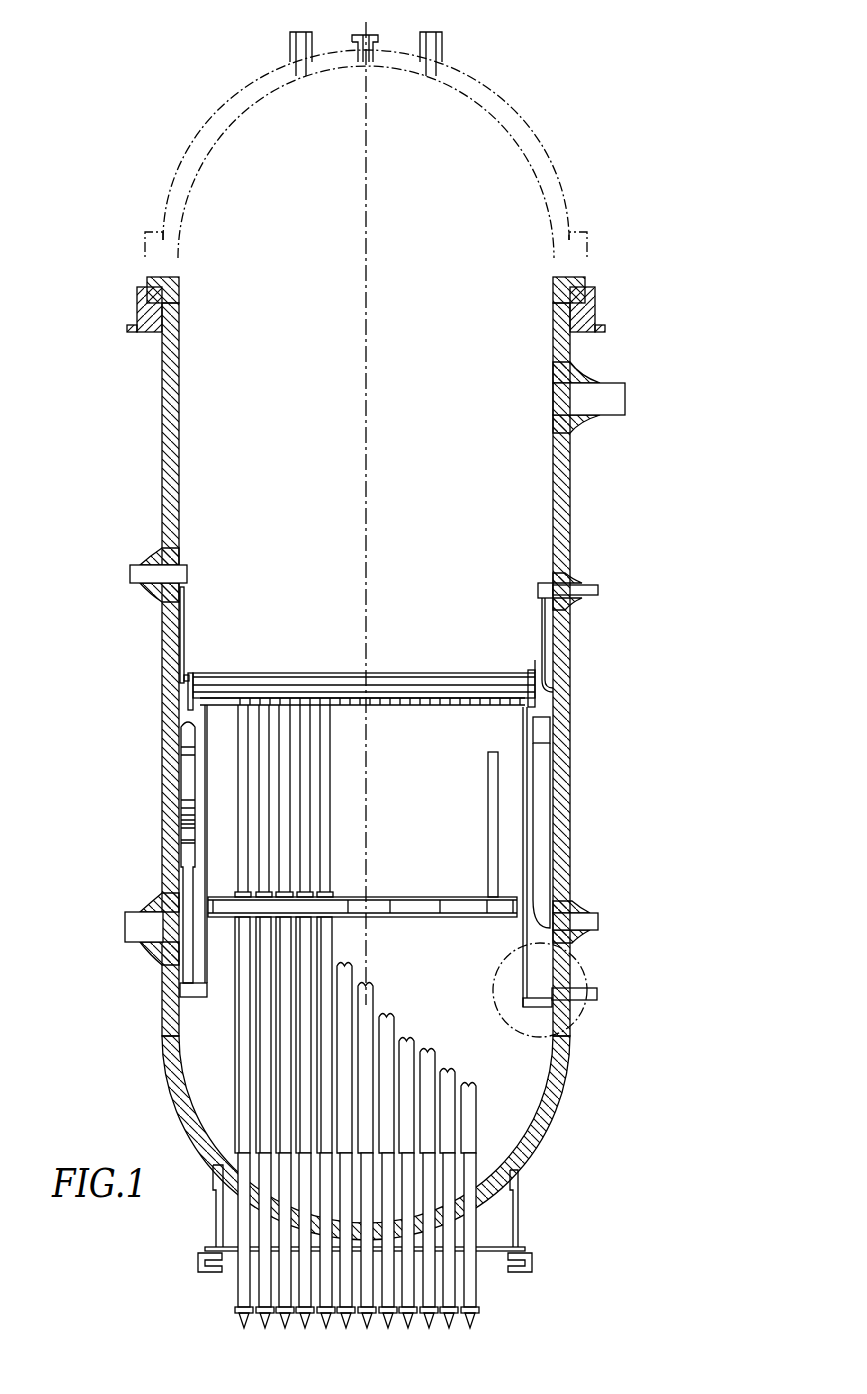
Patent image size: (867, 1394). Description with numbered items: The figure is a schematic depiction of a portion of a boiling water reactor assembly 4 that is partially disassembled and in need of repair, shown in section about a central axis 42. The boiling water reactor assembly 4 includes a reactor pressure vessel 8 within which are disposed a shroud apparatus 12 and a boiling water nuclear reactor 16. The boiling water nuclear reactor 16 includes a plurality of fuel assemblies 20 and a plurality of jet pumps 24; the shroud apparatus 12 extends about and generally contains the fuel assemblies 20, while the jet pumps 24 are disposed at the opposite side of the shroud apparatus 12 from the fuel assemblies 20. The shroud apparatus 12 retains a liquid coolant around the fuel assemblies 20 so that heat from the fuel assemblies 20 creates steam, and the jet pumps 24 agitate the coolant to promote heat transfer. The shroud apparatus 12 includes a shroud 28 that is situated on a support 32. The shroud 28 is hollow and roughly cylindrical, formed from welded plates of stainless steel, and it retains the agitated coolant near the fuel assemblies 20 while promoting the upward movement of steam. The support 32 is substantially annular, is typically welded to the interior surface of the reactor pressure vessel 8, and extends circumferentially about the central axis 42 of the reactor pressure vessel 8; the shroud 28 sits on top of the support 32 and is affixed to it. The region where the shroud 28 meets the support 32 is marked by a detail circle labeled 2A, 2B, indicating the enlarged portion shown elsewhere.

The boiling water reactor assembly 4 is at (612, 515).
The reactor pressure vessel 8 is at (570, 666).
The shroud apparatus 12 is at (537, 788).
The boiling water nuclear reactor 16 is at (296, 1122).
The fuel assemblies 20 is at (237, 1047).
The jet pumps 24 is at (192, 970).
The shroud 28 is at (521, 827).
The support 32 is at (538, 1010).
The central axis 42 is at (366, 408).
The detail region of FIG. 2A is at (604, 974).
The detail region of FIG. 2B is at (587, 968).